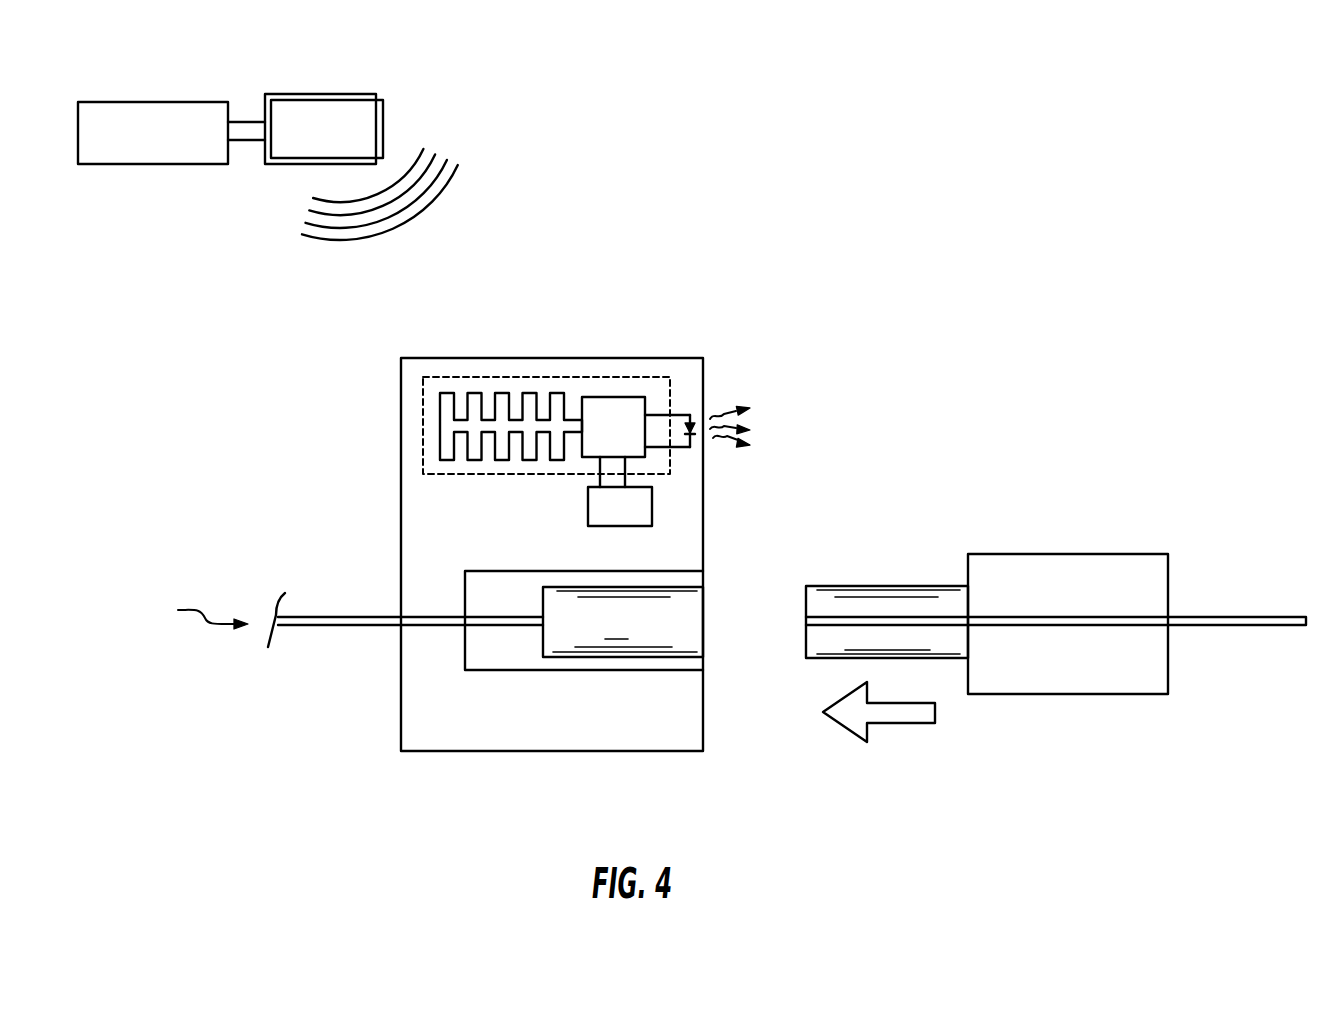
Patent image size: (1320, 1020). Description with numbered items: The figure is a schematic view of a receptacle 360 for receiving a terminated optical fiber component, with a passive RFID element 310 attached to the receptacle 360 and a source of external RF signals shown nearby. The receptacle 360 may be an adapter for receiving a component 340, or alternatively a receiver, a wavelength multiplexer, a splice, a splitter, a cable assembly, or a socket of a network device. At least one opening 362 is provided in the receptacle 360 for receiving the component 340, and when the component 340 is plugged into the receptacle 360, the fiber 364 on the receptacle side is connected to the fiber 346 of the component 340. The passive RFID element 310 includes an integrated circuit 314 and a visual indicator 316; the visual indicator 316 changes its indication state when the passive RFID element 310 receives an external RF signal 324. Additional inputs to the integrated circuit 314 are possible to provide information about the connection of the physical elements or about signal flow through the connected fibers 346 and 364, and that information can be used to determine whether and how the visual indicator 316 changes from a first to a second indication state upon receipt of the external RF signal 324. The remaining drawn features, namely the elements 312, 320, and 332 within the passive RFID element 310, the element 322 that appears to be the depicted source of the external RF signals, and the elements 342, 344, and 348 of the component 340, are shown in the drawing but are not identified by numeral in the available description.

The passive RFID element 310 is at (581, 401).
The antenna 312 is at (463, 420).
The integrated circuit 314 is at (623, 397).
The visual indicator 316 is at (695, 418).
The power source 320 is at (652, 503).
The RFID reader 322 is at (333, 80).
The external RF signal 324 is at (407, 212).
The tag circuit region 332 is at (523, 375).
The component 340 is at (1019, 611).
The connector body 342 is at (1088, 678).
The optical fiber 344 is at (803, 622).
The fiber 346 is at (1203, 615).
The ferrule 348 is at (912, 585).
The receptacle 360 is at (394, 481).
The opening 362 is at (691, 594).
The fiber 364 is at (335, 627).